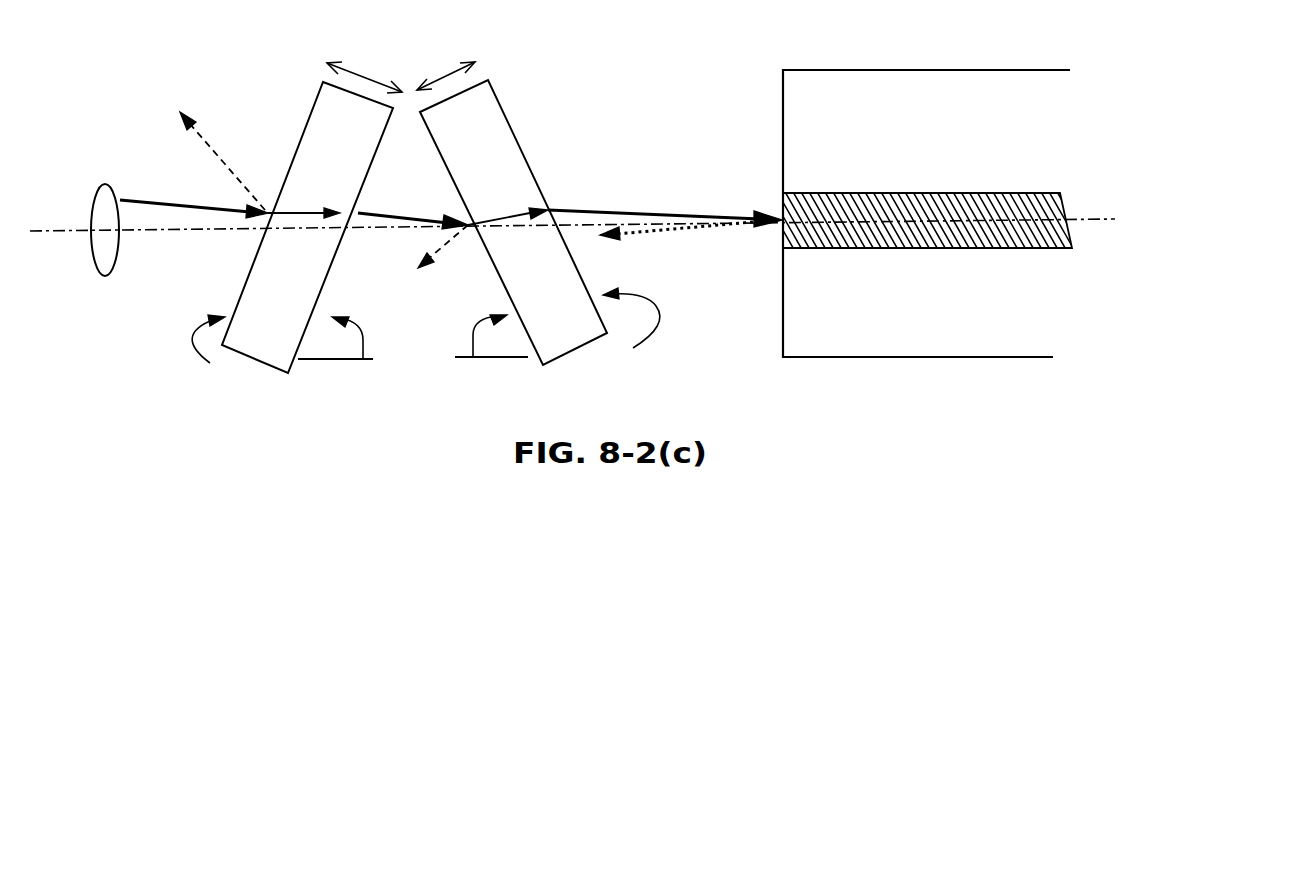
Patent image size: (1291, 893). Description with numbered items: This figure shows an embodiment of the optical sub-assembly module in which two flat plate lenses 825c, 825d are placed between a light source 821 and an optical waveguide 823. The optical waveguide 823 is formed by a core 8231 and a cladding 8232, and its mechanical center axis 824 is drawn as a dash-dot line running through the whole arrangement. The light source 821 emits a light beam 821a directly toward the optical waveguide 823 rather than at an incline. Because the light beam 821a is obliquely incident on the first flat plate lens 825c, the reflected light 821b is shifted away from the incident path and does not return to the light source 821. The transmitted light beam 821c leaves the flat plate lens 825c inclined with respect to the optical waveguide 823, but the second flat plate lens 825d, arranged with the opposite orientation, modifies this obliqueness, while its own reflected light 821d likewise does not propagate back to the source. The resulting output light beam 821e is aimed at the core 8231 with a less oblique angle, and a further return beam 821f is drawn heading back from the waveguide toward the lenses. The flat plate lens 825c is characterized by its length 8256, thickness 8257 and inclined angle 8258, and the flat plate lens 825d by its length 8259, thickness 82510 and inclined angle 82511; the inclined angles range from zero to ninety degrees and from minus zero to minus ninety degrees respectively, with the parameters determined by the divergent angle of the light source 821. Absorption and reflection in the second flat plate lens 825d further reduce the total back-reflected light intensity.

The light source 821 is at (98, 208).
The light beam 821a is at (230, 247).
The reflected light 821b is at (198, 132).
The light beam 821c is at (453, 197).
The reflected light 821d is at (421, 265).
The output light beam 821e is at (665, 196).
The light reflected from detector 821f is at (676, 248).
The flat plate lens 825c is at (307, 227).
The flat plate lens 825d is at (513, 222).
The length of flat plate lens 8256 is at (180, 357).
The thickness of flat plate lens 8257 is at (342, 57).
The inclined angle 8258 is at (346, 358).
The length of flat plate lens 8259 is at (644, 333).
The thickness of flat plate lens 82510 is at (494, 61).
The inclined angle 82511 is at (485, 355).
The optical waveguide 823 is at (926, 245).
The core 8231 is at (895, 195).
The cladding 8232 is at (925, 133).
The mechanical center axis 824 is at (652, 213).